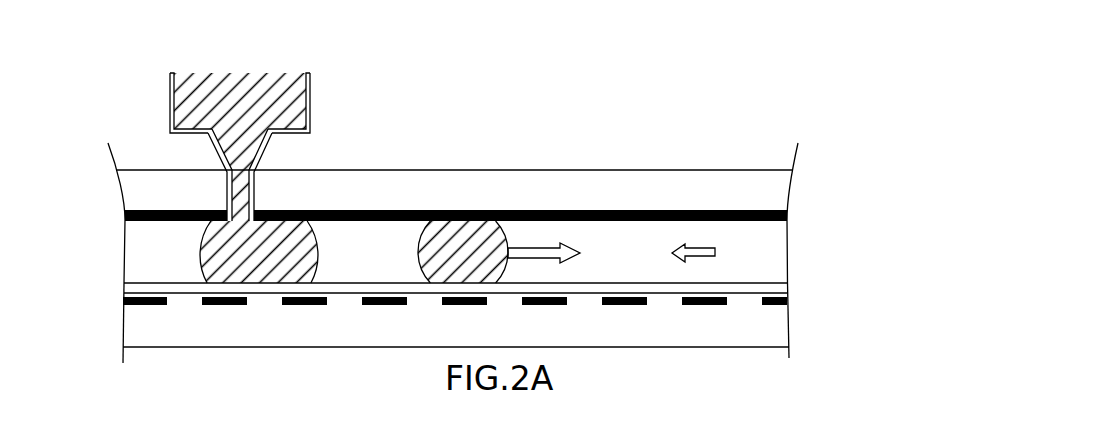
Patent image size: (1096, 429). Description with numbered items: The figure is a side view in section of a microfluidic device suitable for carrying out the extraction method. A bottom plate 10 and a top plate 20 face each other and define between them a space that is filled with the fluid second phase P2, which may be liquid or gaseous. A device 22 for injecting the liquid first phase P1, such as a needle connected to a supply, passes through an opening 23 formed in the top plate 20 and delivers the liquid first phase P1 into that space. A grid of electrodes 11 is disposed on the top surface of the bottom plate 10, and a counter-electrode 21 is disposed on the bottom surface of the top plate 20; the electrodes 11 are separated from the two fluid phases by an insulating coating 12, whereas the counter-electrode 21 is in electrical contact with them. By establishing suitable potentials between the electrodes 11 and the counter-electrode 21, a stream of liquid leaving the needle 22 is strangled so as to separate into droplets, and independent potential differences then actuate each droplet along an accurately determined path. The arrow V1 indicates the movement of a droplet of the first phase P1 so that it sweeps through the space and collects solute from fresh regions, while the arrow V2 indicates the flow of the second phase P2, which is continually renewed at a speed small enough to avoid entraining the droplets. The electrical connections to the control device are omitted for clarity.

The bottom plate 10 is at (128, 328).
The electrodes 11 is at (220, 305).
The insulating coating 12 is at (765, 288).
The top plate 20 is at (130, 188).
The counter-electrode 21 is at (755, 208).
The device for injecting the liquid first phase 22 is at (168, 90).
The opening 23 is at (227, 198).
The liquid first phase P1 is at (472, 250).
The fluid second phase P2 is at (533, 233).
The droplet movement V1 is at (557, 243).
The speed of the second phase V2 is at (700, 248).